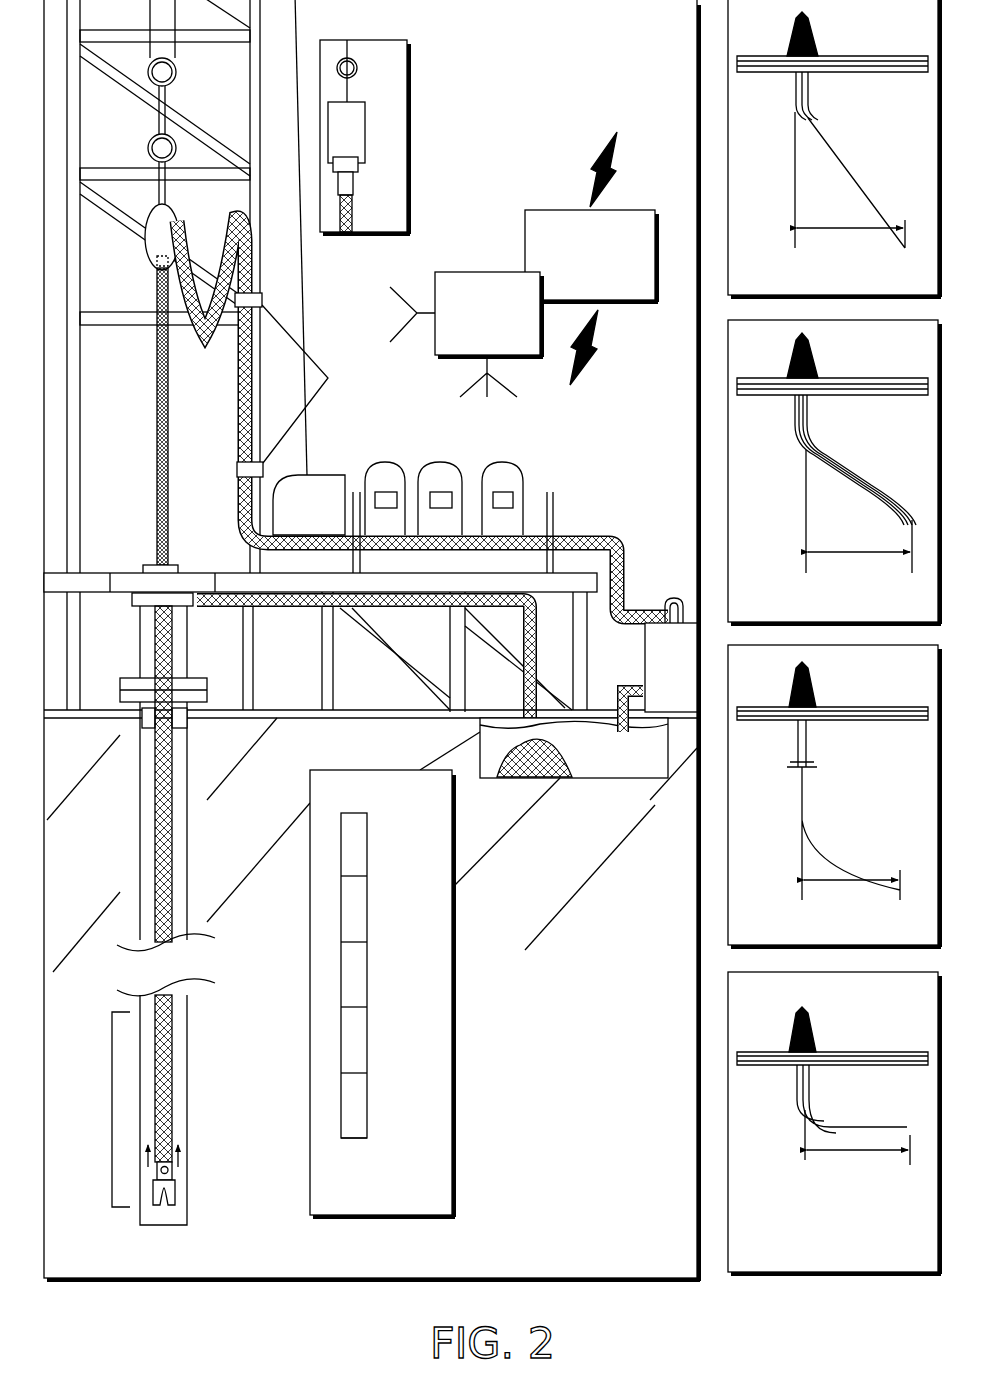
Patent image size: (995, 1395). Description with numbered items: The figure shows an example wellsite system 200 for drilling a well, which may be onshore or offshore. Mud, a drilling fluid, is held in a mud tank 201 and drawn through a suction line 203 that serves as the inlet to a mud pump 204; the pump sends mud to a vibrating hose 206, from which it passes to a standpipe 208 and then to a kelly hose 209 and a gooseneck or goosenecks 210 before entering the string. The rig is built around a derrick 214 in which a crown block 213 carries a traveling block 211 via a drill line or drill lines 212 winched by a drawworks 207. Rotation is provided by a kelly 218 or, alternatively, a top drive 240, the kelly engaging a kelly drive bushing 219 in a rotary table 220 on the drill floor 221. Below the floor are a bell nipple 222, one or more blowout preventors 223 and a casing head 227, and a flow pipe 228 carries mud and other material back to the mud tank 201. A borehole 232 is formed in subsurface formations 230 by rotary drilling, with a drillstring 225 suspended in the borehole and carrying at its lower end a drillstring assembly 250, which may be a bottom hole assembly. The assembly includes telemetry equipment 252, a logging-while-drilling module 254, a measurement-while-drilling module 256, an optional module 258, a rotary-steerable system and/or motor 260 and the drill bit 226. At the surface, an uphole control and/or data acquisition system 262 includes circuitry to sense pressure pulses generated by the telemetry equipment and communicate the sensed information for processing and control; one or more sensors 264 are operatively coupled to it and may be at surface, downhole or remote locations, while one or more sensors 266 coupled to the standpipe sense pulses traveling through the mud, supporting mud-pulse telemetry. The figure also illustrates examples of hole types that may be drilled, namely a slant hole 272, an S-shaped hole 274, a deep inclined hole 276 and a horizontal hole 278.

The wellsite system 200 is at (657, 50).
The mud tank 201 is at (655, 765).
The suction line 203 is at (620, 733).
The mud pump 204 is at (690, 681).
The vibrating hose 206 is at (582, 537).
The drawworks 207 is at (330, 520).
The standpipe 208 is at (238, 436).
The kelly hose 209 is at (219, 338).
The gooseneck 210 is at (178, 219).
The traveling block 211 is at (158, 82).
The drill line 212 is at (307, 437).
The crown block 213 is at (137, 7).
The derrick 214 is at (74, 433).
The kelly 218 is at (154, 256).
The kelly drive bushing 219 is at (152, 565).
The rotary table 220 is at (130, 580).
The drill floor 221 is at (193, 573).
The bell nipple 222 is at (153, 602).
The blowout preventor 223 is at (157, 658).
The drillstring 225 is at (155, 840).
The drill bit 226 is at (173, 1180).
The casing head 227 is at (183, 718).
The flow pipe 228 is at (273, 610).
The subsurface formations 230 is at (274, 822).
The borehole 232 is at (187, 1050).
The top drive 240 is at (353, 100).
The drillstring assembly 250 is at (112, 1105).
The telemetry equipment 252 is at (355, 850).
The logging-while-drilling (LWD) module 254 is at (355, 920).
The measurement-while-drilling (MWD) module 256 is at (355, 982).
The optional module 258 is at (355, 1048).
The rotary-steerable system and/or motor 260 is at (355, 1118).
The control and/or data acquisition system 262 is at (574, 295).
The sensors 264 is at (471, 337).
The sensors 266 is at (328, 378).
The slant hole 272 is at (895, 286).
The S-shaped hole 274 is at (915, 612).
The deep inclined hole 276 is at (932, 936).
The horizontal hole 278 is at (915, 1222).